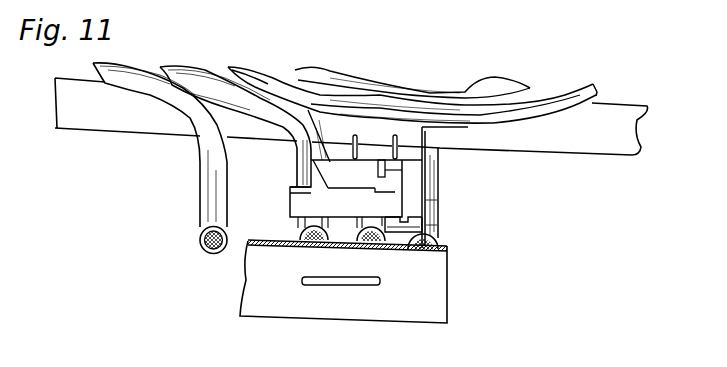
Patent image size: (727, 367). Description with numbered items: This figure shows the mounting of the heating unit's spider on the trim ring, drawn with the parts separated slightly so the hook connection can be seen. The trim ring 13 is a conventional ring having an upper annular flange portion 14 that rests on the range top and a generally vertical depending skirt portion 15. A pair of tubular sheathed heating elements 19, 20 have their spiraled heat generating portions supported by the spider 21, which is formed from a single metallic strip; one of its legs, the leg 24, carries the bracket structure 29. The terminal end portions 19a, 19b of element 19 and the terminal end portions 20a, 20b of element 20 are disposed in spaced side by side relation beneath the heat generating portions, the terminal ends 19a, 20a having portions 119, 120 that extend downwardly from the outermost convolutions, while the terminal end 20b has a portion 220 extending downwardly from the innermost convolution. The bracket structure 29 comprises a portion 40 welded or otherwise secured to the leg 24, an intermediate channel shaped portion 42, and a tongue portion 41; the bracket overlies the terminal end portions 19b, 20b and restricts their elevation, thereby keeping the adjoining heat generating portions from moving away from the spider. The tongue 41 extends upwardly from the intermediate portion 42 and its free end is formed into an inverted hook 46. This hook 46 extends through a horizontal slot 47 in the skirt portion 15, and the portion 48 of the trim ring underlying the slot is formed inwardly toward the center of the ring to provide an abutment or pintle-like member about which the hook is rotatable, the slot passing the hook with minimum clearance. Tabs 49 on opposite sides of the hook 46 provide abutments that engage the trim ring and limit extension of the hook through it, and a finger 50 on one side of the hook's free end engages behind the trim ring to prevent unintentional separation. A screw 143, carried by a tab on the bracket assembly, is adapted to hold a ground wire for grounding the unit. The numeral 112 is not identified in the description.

The trim ring 13 is at (241, 300).
The upper annular flange portion 14 is at (284, 246).
The skirt portion 15 is at (310, 300).
The heating element 19 is at (580, 85).
The terminal end portion 19a is at (200, 238).
The terminal end portion 19b is at (366, 245).
The heating element 20 is at (505, 82).
The terminal end portion 20a is at (302, 232).
The terminal end portion 20b is at (440, 241).
The spider 21 is at (632, 156).
The leg 24 is at (102, 117).
The bracket structure 29 is at (423, 137).
The portion 40 is at (343, 127).
The tongue portion 41 is at (362, 175).
The intermediate channel shaped portion 42 is at (438, 185).
The inverted hook 46 is at (308, 110).
The horizontal slot 47 is at (357, 287).
The portion of the trim ring underlying the slot 48 is at (337, 303).
The tabs 49 is at (377, 195).
The finger 50 is at (388, 182).
The lower block 112 is at (394, 233).
The downwardly extending portion 119 is at (212, 176).
The downwardly extending portion 120 is at (303, 178).
The screw 143 is at (411, 228).
The downwardly extending portion 220 is at (438, 218).